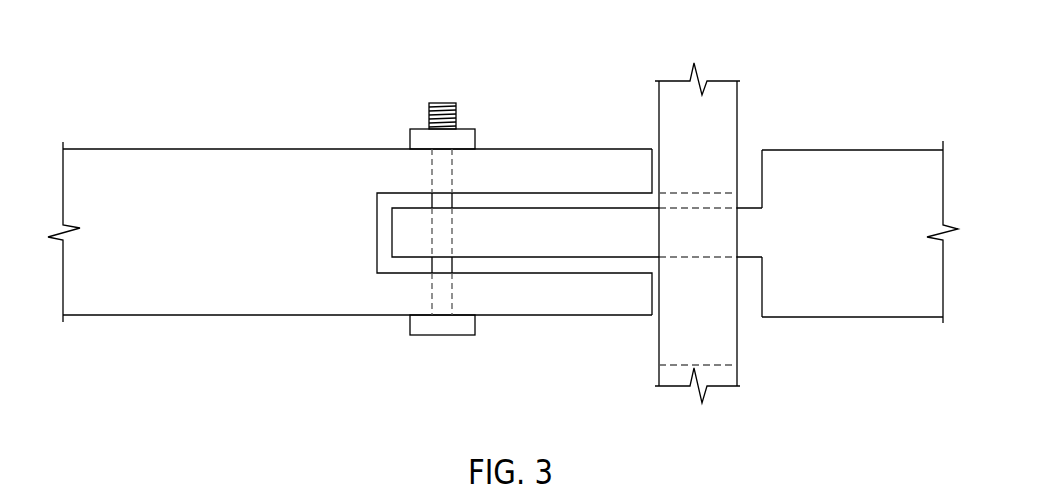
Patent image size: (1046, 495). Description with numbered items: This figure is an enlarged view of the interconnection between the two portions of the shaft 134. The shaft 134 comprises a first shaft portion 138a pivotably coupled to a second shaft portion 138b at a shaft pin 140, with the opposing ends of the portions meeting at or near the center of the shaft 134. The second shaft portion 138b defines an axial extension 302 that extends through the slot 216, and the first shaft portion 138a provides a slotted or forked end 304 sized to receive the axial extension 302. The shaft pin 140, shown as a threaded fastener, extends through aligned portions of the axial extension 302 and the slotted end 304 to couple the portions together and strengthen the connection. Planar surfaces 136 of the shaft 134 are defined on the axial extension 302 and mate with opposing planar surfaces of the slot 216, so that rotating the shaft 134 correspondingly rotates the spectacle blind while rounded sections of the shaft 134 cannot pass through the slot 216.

The shaft 134 is at (106, 59).
The first shaft portion 138a is at (161, 163).
The second shaft portion 138b is at (911, 163).
The shaft pin 140 is at (453, 112).
The slotted end 304 is at (598, 151).
The axial extension 302 is at (556, 247).
The planar surfaces 136 is at (755, 208).
The slot 216 is at (723, 347).